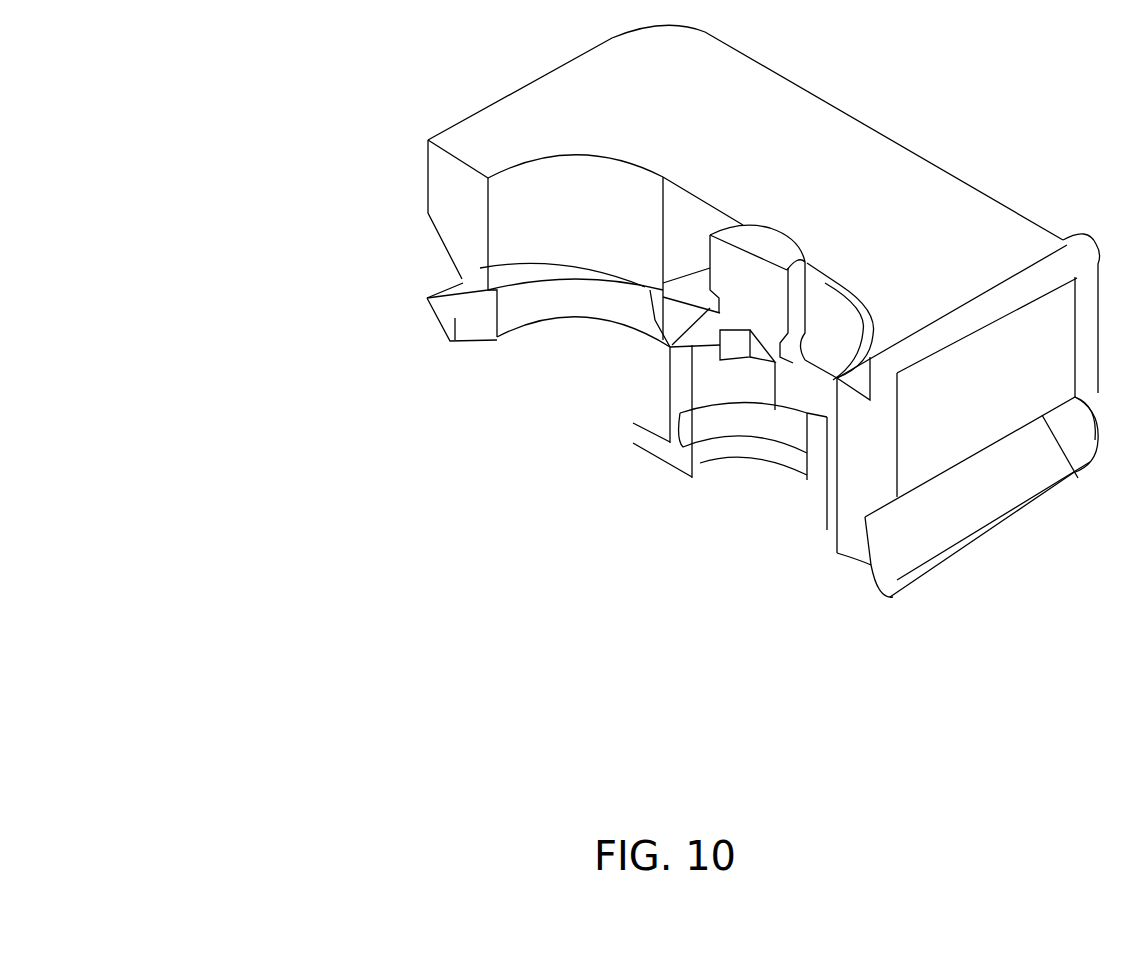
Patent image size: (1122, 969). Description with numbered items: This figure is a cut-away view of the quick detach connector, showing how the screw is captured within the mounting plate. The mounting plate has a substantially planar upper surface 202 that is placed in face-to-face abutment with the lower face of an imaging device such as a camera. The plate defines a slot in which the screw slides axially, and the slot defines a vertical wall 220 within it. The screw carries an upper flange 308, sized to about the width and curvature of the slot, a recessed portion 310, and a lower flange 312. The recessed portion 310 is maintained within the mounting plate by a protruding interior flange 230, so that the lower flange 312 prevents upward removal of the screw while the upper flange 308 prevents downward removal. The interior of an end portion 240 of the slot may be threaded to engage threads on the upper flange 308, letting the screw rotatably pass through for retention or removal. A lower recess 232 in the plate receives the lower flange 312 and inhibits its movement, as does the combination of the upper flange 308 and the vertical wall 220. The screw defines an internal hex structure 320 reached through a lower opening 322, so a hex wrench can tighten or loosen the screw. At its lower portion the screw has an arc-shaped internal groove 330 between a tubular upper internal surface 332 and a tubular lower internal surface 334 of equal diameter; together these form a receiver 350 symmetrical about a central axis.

The upper surface 202 is at (682, 112).
The vertical wall 220 is at (587, 225).
The protruding interior flange 230 is at (528, 302).
The lower recess 232 is at (466, 328).
The end portion 240 is at (810, 538).
The upper flange 308 is at (480, 268).
The recessed portion 310 is at (657, 398).
The lower flange 312 is at (610, 434).
The internal hex structure 320 is at (722, 345).
The lower opening 322 is at (730, 458).
The internal groove 330 is at (712, 437).
The upper internal surface 332 is at (712, 390).
The lower internal surface 334 is at (712, 458).
The receiver 350 is at (717, 610).